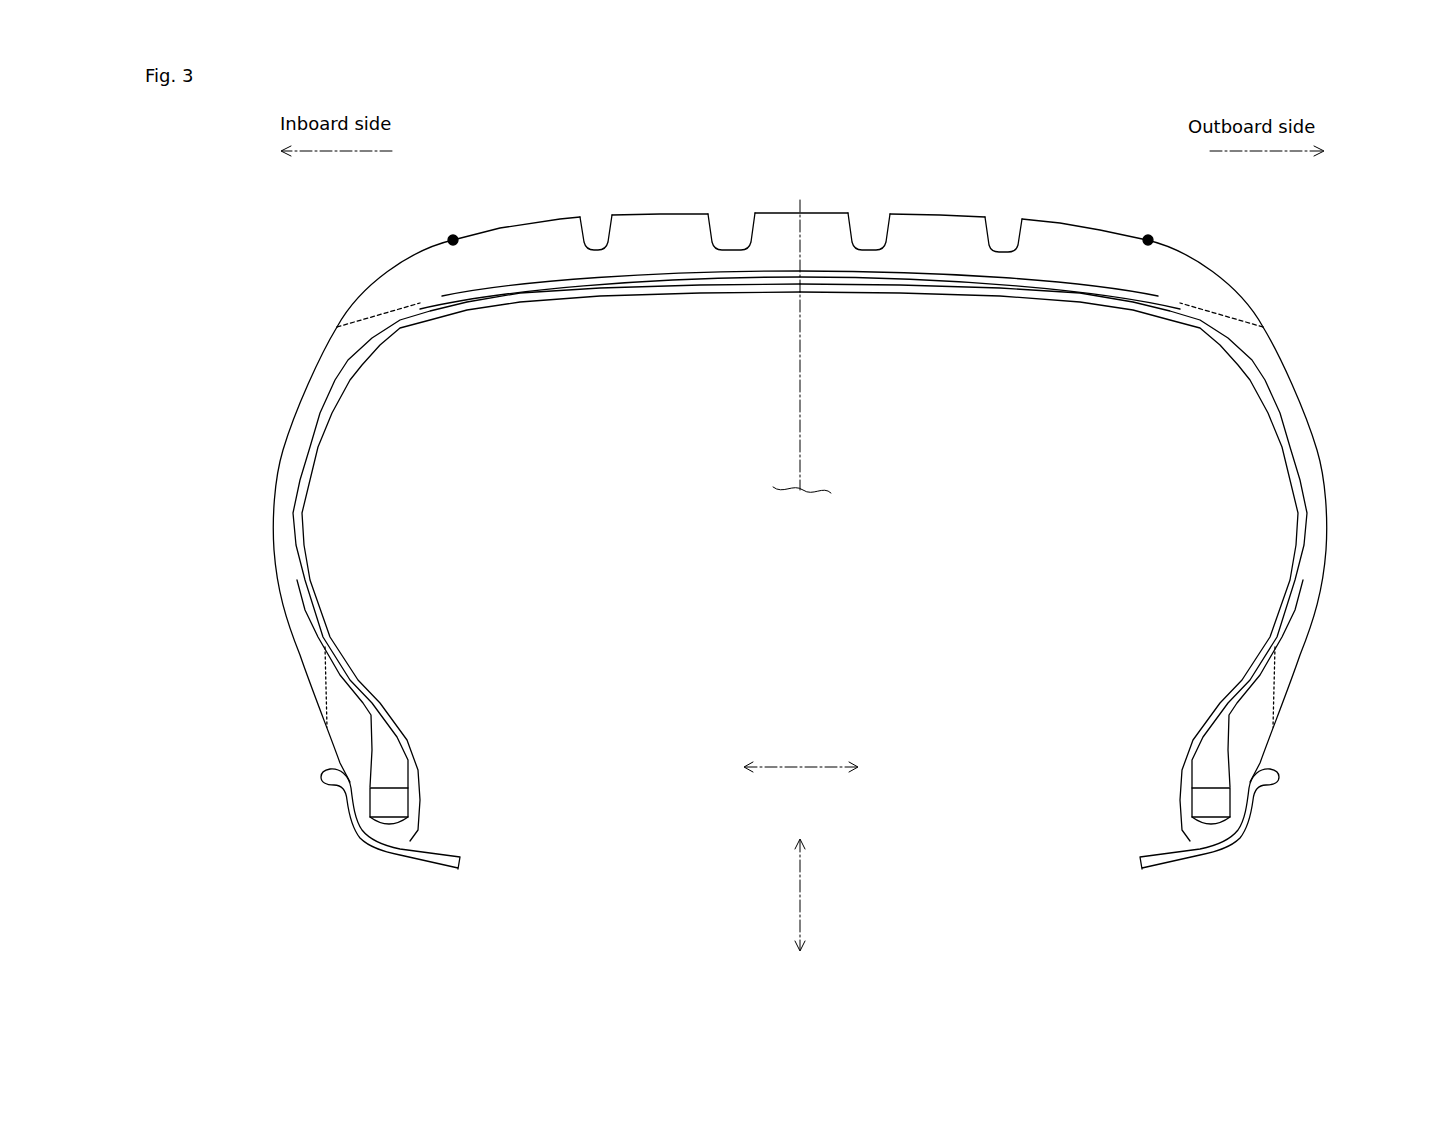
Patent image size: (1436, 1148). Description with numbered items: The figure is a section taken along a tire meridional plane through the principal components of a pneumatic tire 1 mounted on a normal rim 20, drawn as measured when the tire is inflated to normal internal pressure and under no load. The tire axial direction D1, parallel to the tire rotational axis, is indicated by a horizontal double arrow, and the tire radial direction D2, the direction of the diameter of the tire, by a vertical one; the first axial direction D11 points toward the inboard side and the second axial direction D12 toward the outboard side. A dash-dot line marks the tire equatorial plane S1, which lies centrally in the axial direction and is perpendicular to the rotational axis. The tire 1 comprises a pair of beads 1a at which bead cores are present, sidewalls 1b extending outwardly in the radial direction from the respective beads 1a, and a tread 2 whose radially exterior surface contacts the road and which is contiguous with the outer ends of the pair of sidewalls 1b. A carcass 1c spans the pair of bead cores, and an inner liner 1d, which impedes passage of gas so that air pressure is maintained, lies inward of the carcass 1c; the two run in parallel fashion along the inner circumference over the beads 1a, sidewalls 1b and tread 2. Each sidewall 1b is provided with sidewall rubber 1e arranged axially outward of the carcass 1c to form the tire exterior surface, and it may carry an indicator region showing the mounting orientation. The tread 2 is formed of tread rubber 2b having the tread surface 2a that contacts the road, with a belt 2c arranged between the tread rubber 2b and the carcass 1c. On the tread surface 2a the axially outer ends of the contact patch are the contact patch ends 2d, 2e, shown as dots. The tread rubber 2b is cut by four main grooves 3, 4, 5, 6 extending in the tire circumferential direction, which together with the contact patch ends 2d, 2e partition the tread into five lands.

The pneumatic tire 1 is at (1332, 218).
The bead 1a is at (320, 745).
The sidewall 1b is at (280, 410).
The carcass 1c is at (565, 304).
The inner liner 1d is at (950, 297).
The sidewall rubber 1e is at (287, 492).
The tread 2 is at (805, 200).
The tread surface 2a is at (527, 226).
The tread rubber 2b is at (932, 225).
The belt 2c is at (670, 292).
The contact patch end 2d is at (453, 238).
The contact patch end 2e is at (1148, 238).
The main groove 3 is at (597, 221).
The main groove 4 is at (1005, 221).
The main groove 5 is at (733, 214).
The main groove 6 is at (866, 214).
The rim 20 is at (395, 858).
The tire equatorial plane S1 is at (803, 430).
The tire axial direction D1 is at (801, 780).
The tire radial direction D2 is at (816, 895).
The first axial direction D11 is at (314, 151).
The second axial direction D12 is at (1288, 151).